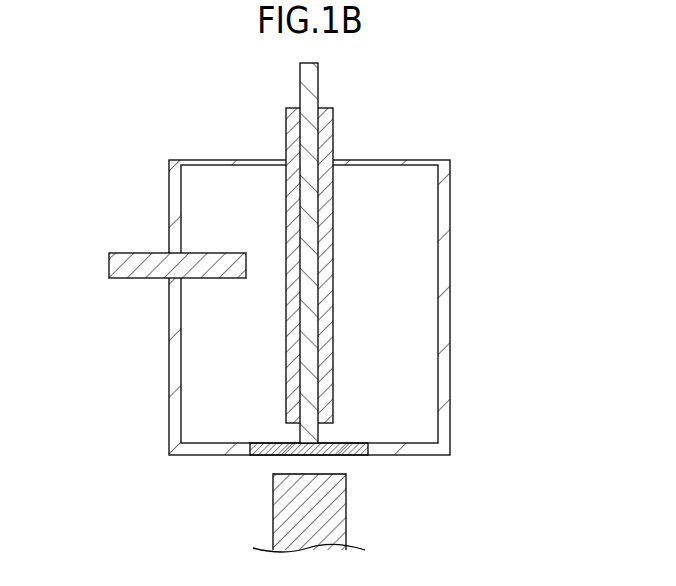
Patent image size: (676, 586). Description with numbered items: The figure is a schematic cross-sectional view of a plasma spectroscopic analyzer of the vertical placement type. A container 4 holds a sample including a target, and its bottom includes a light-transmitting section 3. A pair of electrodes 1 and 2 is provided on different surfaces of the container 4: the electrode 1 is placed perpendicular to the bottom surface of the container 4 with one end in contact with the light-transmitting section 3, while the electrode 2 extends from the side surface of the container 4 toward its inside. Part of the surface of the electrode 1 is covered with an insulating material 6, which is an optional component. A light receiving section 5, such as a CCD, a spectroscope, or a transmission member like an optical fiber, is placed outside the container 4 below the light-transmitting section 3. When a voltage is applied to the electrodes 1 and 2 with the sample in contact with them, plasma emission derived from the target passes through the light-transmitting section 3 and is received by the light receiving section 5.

The electrode 1 is at (318, 82).
The electrode 2 is at (134, 279).
The light-transmitting section 3 is at (353, 455).
The container 4 is at (446, 272).
The light receiving section 5 is at (338, 522).
The insulating material 6 is at (334, 130).